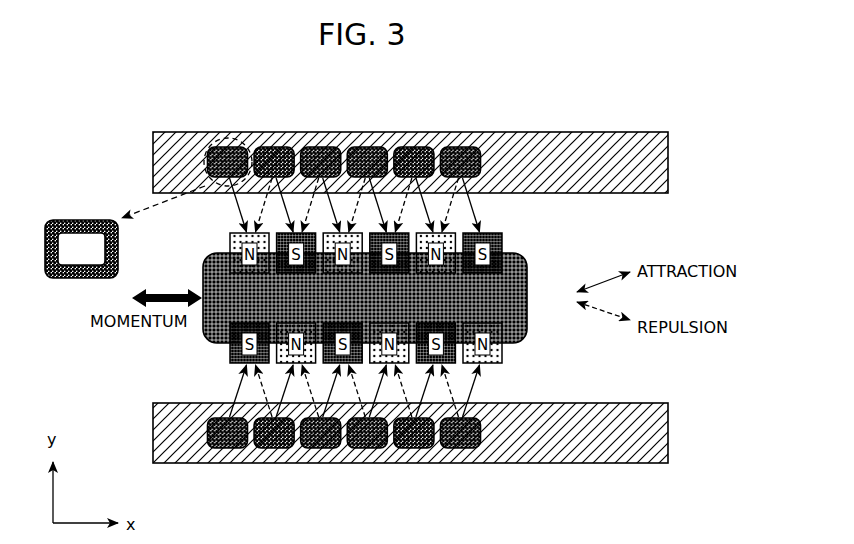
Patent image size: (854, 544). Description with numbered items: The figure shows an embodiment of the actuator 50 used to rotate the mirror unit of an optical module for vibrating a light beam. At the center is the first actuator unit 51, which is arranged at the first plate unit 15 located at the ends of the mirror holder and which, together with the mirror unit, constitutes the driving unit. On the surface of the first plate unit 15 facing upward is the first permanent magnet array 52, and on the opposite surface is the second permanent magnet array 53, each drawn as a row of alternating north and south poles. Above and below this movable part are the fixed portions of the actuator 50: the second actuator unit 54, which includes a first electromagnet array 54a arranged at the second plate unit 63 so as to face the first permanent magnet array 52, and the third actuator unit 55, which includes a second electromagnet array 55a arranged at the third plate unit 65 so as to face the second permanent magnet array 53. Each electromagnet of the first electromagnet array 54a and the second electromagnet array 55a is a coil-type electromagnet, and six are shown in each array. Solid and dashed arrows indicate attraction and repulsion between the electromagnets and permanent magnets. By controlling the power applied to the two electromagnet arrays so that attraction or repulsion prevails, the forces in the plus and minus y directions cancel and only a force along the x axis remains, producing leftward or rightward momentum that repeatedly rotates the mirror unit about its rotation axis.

The actuator 50 is at (134, 121).
The second plate unit 63 is at (658, 164).
The second actuator unit 54 is at (484, 144).
The first electromagnet array 54a is at (213, 150).
The third plate unit 65 is at (658, 437).
The third actuator unit 55 is at (484, 452).
The second electromagnet array 55a is at (213, 447).
The first actuator unit 51 is at (536, 244).
The first plate unit 15 is at (518, 314).
The first permanent magnet array 52 is at (228, 240).
The second permanent magnet array 53 is at (228, 353).